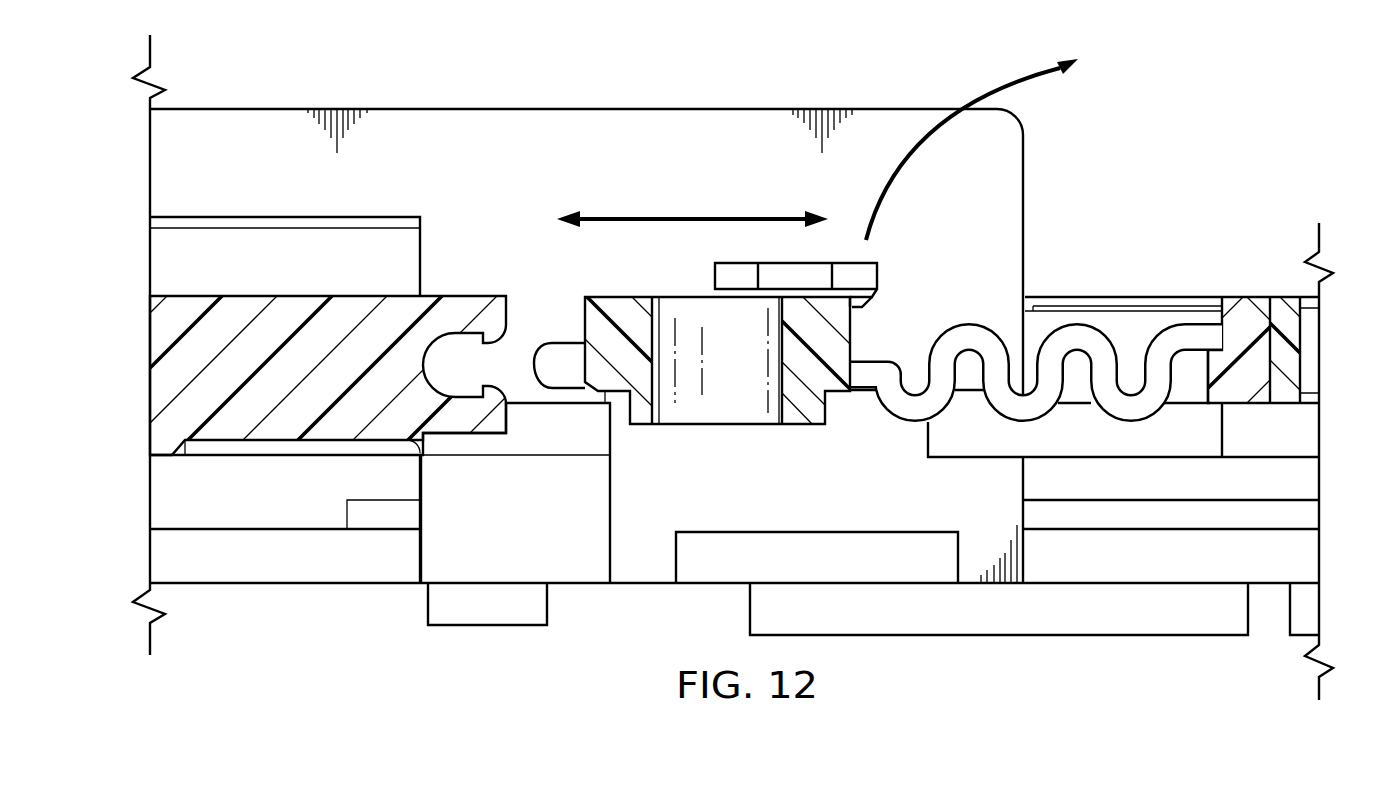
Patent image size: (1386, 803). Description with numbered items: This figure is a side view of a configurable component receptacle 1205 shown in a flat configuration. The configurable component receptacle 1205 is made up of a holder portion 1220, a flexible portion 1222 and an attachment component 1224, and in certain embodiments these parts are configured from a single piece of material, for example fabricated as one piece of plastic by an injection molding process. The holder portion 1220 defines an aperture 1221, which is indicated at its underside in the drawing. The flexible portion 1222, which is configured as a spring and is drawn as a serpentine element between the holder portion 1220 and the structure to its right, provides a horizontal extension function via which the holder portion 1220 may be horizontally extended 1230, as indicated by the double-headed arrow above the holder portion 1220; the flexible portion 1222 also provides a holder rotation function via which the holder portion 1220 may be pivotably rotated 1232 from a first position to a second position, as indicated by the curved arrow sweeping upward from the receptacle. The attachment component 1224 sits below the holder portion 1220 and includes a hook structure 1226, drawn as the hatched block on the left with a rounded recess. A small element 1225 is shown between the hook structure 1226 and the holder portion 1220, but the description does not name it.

The configurable component receptacle 1205 is at (1040, 216).
The holder portion 1220 is at (620, 306).
The aperture 1221 is at (718, 440).
The flexible portion 1222 is at (1078, 436).
The attachment component 1224 is at (567, 390).
The retaining clip 1225 is at (548, 338).
The hook structure 1226 is at (462, 306).
The horizontal extension 1230 is at (703, 214).
The pivotable rotation 1232 is at (1003, 93).